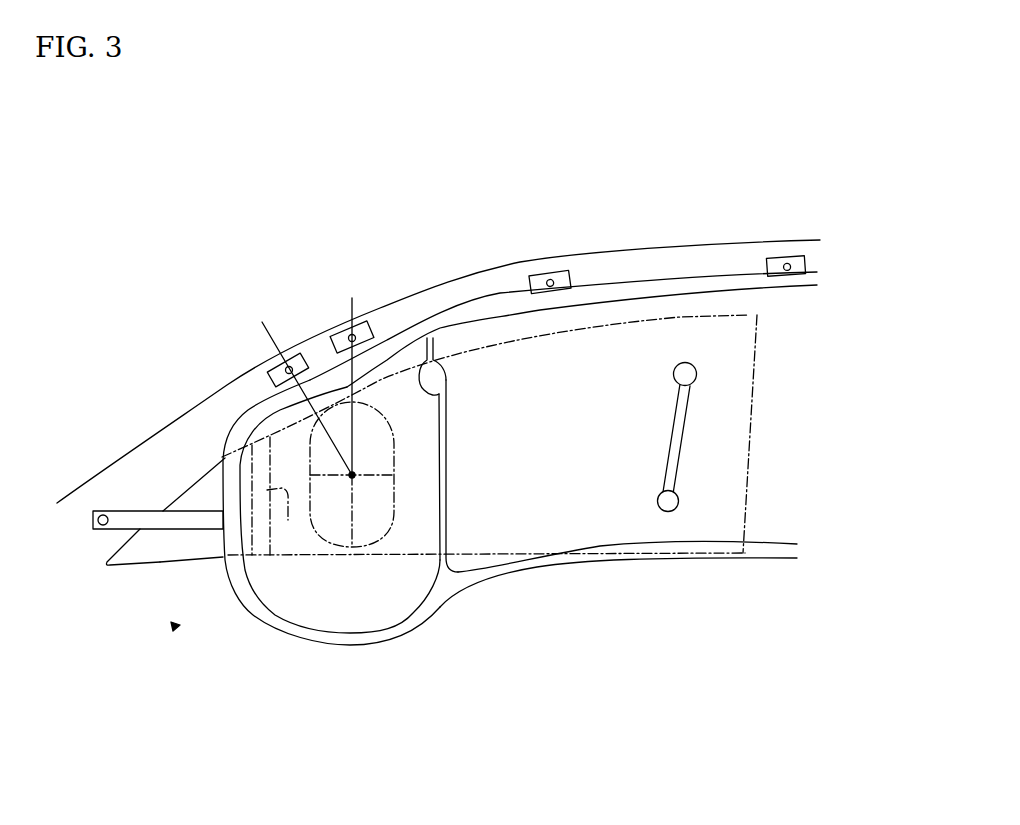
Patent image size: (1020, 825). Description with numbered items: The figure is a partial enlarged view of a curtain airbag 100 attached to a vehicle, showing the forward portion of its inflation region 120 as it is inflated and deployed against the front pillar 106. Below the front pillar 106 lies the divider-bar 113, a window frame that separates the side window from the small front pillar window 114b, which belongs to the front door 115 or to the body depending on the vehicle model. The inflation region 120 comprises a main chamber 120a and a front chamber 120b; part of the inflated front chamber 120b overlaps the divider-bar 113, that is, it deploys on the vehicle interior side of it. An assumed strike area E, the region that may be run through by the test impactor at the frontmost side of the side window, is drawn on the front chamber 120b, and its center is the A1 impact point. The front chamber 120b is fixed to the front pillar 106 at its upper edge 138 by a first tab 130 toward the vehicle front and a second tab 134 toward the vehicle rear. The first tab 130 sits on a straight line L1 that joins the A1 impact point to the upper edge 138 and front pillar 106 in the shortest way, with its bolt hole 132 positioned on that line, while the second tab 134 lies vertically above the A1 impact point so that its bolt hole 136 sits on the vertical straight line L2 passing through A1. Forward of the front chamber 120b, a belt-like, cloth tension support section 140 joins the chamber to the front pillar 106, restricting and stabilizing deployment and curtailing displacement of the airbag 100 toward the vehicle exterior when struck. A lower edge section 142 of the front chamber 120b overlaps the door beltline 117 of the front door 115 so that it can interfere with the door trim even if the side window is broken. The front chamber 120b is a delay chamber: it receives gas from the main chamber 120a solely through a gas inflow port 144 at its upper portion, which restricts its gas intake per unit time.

The airbag 100 is at (610, 286).
The front pillar 106 is at (176, 434).
The divider-bar 113 is at (287, 496).
The front pillar window 114b is at (142, 543).
The front door 115 is at (176, 626).
The door beltline 117 is at (207, 558).
The inflation region 120 is at (673, 316).
The main chamber 120a is at (597, 490).
The front chamber 120b is at (272, 565).
The first tab 130 is at (273, 366).
The bolt hole 132 is at (272, 388).
The second tab 134 is at (333, 325).
The bolt hole 136 is at (371, 338).
The upper edge 138 is at (395, 330).
The tension support section 140 is at (190, 511).
The lower edge section 142 is at (360, 633).
The gas inflow port 144 is at (430, 337).
The assumed strike area E is at (367, 443).
The A1 impact point A1 is at (354, 475).
The straight line L1 is at (298, 390).
The straight line L2 is at (351, 413).